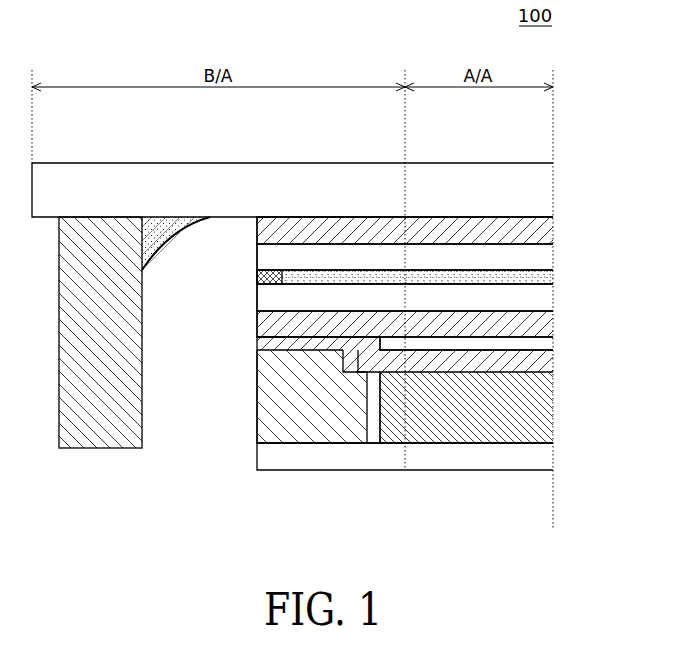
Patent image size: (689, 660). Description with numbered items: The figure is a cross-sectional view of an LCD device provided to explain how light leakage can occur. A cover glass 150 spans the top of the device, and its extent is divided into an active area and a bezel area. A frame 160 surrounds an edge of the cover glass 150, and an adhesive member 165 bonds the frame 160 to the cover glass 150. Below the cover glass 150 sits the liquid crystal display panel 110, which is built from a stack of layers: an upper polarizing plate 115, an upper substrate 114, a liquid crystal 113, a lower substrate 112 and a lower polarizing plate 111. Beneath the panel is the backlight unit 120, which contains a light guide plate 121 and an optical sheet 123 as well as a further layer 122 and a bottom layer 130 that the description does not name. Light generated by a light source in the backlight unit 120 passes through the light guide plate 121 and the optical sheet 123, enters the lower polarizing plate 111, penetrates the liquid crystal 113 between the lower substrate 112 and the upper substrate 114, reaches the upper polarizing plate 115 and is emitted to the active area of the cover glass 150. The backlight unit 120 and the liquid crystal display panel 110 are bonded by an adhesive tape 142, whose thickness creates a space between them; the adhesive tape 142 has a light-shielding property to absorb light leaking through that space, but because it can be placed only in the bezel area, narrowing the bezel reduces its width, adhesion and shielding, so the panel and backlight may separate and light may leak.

The liquid crystal display panel 110 is at (619, 222).
The lower polarizing plate 111 is at (545, 329).
The lower substrate 112 is at (545, 302).
The liquid crystal 113 is at (545, 280).
The upper substrate 114 is at (545, 259).
The upper polarizing plate 115 is at (545, 232).
The backlight unit 120 is at (619, 352).
The light guide plate 121 is at (545, 430).
The second support layer 122 is at (360, 395).
The optical sheet 123 is at (545, 360).
The bottom plate 130 is at (545, 459).
The adhesive tape 142 is at (332, 344).
The cover glass 150 is at (545, 194).
The frame 160 is at (95, 433).
The adhesive member 165 is at (152, 222).